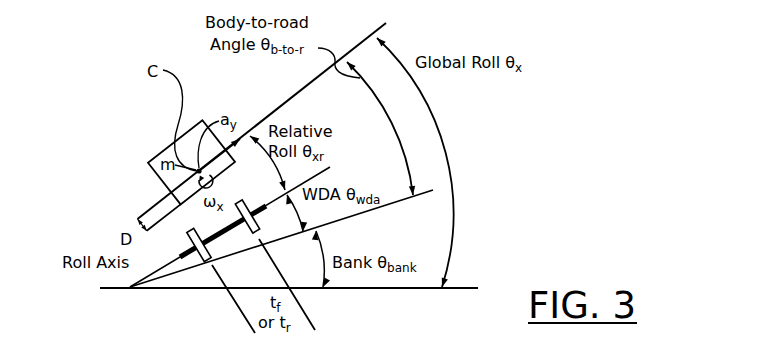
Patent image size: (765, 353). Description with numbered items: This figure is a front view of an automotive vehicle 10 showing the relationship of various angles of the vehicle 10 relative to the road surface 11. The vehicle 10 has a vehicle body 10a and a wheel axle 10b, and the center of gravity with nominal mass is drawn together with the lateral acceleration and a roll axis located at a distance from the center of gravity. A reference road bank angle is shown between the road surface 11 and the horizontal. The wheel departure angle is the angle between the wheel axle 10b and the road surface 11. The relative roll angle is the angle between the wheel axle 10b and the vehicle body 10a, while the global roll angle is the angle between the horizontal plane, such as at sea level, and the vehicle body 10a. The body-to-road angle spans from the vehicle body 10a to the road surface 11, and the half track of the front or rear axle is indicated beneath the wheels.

The vehicle 10 is at (92, 175).
The vehicle body 10a is at (156, 159).
The wheel axle 10b is at (238, 201).
The road surface 11 is at (358, 216).